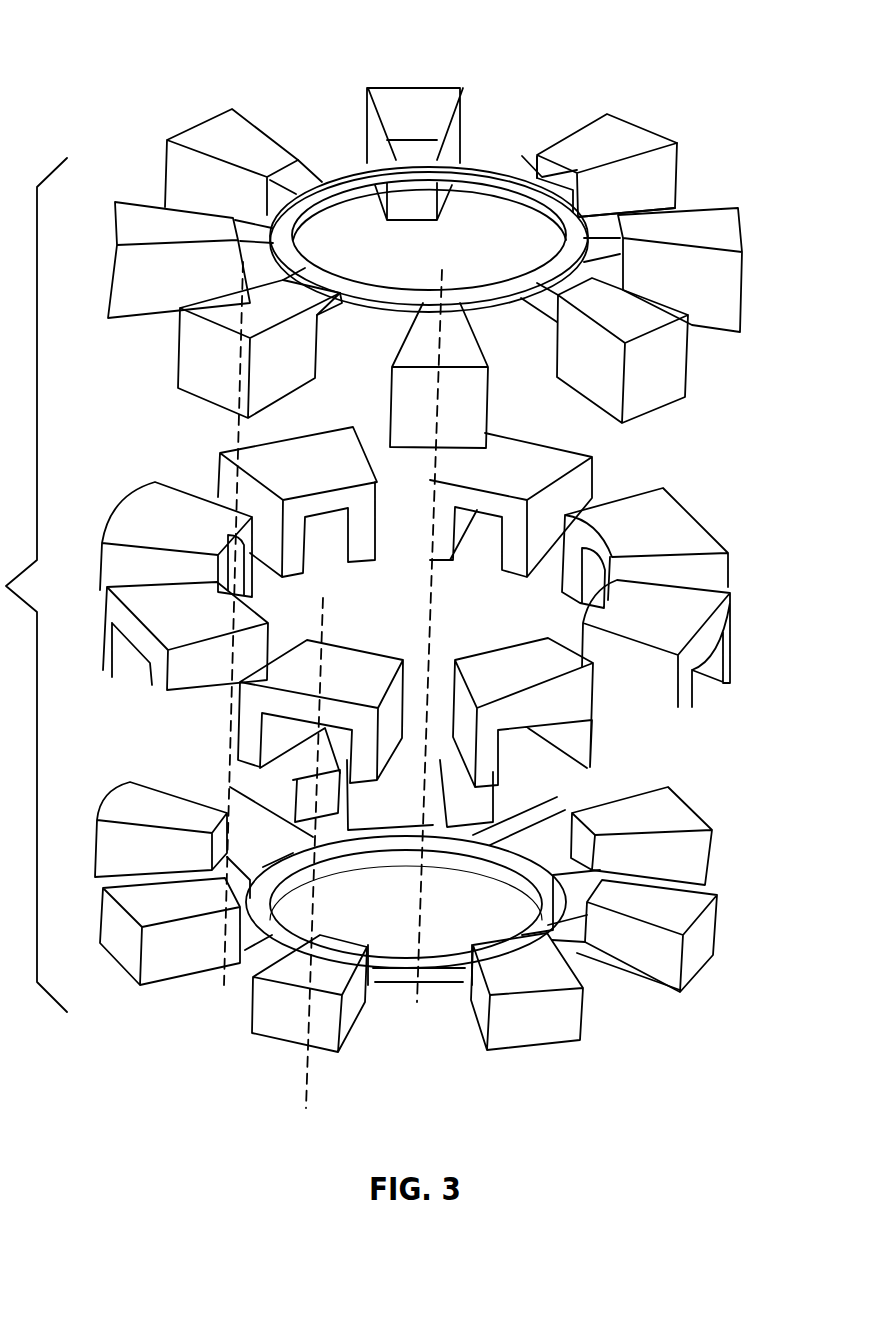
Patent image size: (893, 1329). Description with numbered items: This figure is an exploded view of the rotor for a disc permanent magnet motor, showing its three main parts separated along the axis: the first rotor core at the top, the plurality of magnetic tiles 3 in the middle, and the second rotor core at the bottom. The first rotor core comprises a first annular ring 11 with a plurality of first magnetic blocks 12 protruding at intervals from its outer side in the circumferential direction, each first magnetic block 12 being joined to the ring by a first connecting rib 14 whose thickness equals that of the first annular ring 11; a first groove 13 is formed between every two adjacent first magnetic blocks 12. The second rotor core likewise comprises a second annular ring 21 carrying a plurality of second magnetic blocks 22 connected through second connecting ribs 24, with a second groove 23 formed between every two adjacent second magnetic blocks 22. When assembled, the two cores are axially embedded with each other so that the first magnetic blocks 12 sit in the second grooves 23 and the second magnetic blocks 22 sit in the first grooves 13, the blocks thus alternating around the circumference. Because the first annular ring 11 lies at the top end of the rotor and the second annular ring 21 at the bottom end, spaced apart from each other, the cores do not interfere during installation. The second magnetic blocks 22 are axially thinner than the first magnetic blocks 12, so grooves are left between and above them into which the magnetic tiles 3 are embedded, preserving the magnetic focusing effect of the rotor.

The first annular ring 11 is at (469, 168).
The first magnetic blocks 12 is at (619, 145).
The first groove 13 is at (682, 193).
The first connecting rib 14 is at (543, 165).
The magnetic tiles 3 is at (682, 632).
The second annular ring 21 is at (540, 940).
The second magnetic blocks 22 is at (275, 1023).
The second groove 23 is at (405, 1022).
The second connecting rib 24 is at (573, 930).